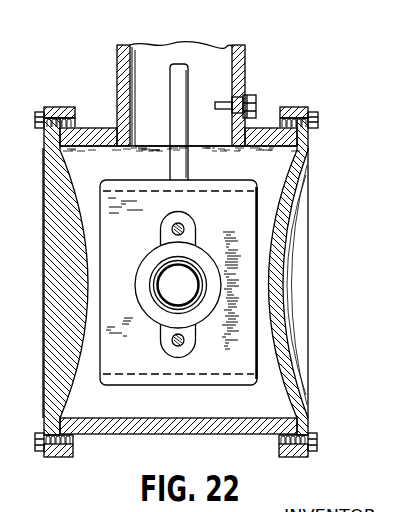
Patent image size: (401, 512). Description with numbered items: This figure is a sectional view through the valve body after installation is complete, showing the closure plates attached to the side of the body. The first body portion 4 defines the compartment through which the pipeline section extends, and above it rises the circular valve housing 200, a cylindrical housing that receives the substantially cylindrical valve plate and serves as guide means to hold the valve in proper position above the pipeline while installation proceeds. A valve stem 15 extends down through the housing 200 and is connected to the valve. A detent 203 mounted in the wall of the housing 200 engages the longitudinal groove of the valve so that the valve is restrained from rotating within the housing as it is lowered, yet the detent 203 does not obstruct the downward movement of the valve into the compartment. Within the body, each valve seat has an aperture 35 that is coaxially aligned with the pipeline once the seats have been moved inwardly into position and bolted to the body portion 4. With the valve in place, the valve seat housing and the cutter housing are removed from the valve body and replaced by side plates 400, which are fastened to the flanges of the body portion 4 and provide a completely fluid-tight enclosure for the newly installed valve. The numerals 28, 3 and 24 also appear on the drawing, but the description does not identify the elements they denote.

The first body portion 4 is at (262, 128).
The side plates 400 is at (43, 181).
The circular valve housing 200 is at (251, 54).
The detent 203 is at (245, 96).
The valve stem 15 is at (181, 97).
The mounting plate 28 is at (127, 191).
The aperture 35 is at (191, 268).
The body 3 is at (4, 286).
The side wall 24 is at (9, 313).